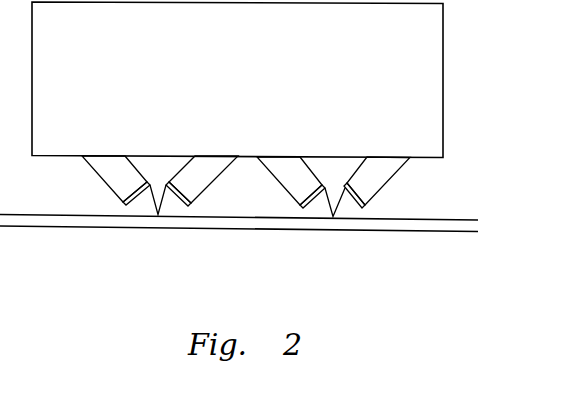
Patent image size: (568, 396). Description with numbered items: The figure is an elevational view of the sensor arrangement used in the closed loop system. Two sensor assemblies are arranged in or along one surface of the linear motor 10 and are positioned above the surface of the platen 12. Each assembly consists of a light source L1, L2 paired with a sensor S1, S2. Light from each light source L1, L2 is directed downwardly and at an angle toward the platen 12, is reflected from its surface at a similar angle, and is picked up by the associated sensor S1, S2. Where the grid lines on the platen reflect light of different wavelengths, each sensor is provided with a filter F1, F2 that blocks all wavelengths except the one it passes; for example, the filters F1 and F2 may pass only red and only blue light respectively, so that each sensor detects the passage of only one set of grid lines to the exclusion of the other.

The linear motor 10 is at (443, 85).
The platen 12 is at (462, 218).
The sensor S1 is at (378, 175).
The sensor S2 is at (115, 165).
The light source L1 is at (288, 173).
The light source L2 is at (203, 168).
The filter F1 is at (367, 205).
The filter F2 is at (126, 204).